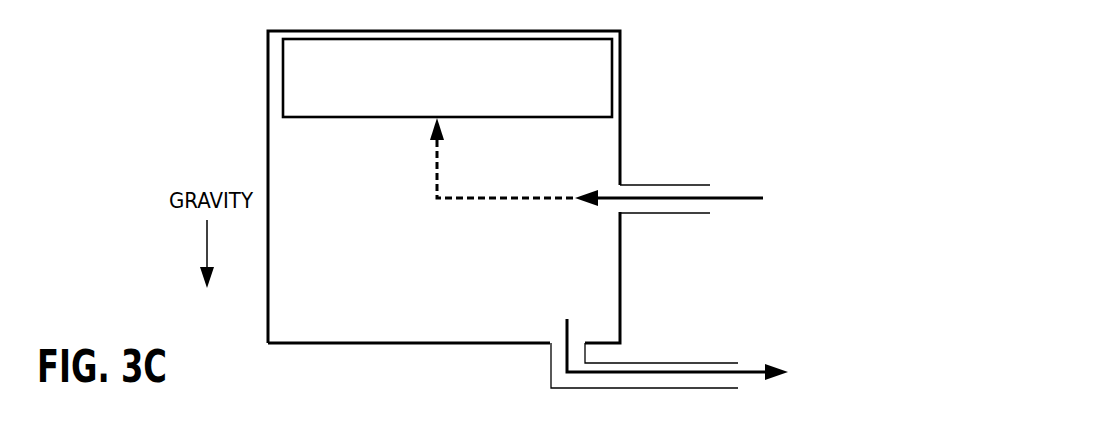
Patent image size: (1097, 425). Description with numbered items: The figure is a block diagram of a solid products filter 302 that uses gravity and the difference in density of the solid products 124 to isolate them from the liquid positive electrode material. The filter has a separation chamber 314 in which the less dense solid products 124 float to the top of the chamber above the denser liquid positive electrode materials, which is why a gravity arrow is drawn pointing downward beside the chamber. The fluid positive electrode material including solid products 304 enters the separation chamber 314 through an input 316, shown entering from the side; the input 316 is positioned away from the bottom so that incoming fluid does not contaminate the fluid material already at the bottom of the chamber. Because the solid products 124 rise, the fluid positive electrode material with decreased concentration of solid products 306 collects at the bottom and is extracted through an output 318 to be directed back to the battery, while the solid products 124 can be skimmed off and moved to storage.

The solid products 124 is at (461, 102).
The solid products filter 302 is at (712, 113).
The fluid positive electrode material including solid products 304 is at (725, 195).
The fluid positive electrode material with decreased concentration of solid products 306 is at (745, 370).
The separation chamber 314 is at (537, 28).
The input 316 is at (633, 188).
The output 318 is at (550, 366).